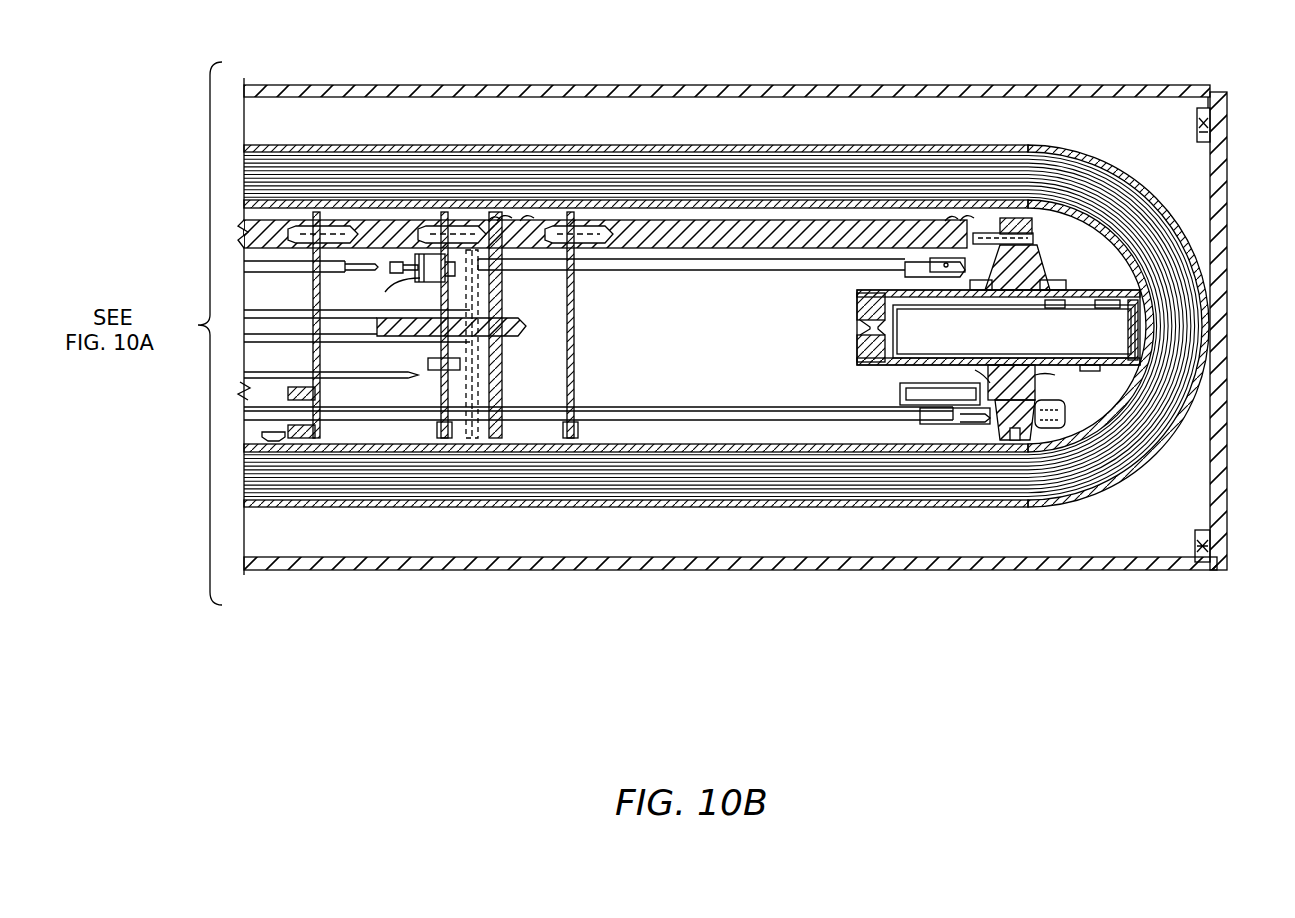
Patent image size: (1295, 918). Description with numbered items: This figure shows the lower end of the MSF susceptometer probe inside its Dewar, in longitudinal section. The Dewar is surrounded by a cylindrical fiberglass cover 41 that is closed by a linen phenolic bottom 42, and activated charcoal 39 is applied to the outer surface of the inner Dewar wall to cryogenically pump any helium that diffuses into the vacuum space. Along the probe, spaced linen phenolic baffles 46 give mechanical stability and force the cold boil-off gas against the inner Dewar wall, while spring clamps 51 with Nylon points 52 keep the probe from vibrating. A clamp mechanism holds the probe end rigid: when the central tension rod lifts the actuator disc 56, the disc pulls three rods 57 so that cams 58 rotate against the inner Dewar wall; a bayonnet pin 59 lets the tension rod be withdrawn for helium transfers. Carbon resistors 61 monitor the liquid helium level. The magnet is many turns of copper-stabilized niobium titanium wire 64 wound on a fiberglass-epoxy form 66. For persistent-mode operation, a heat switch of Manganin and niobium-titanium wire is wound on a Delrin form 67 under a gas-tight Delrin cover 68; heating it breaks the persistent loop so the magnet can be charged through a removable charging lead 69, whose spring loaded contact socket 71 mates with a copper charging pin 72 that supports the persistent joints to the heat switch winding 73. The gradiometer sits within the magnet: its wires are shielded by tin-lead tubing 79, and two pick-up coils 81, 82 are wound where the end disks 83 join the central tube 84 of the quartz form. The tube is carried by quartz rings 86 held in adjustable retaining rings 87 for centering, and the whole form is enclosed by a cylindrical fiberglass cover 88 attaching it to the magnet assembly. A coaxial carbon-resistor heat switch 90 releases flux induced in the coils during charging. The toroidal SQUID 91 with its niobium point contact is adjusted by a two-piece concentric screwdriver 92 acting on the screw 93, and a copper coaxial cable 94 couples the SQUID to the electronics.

The activated charcoal 39 is at (1160, 348).
The cylindrical cover 41 is at (1132, 568).
The linen phenolic bottom 42 is at (1220, 430).
The baffles 46 is at (318, 380).
The spring clamps 51 is at (293, 440).
The Nylon points 52 is at (271, 440).
The actuator disc 56 is at (497, 380).
The rods 57 is at (640, 266).
The cams 58 is at (947, 262).
The bayonnet pin 59 is at (478, 370).
The carbon resistors 61 is at (508, 218).
The niobium titanium wire 64 is at (1036, 228).
The fiberglass-epoxy form 66 is at (1053, 280).
The Delrin form 67 is at (903, 410).
The Delrin cover 68 is at (895, 393).
The charging lead 69 is at (700, 424).
The spring loaded contact socket 71 is at (940, 426).
The copper charging pins 72 is at (1010, 440).
The heat switch winding 73 is at (1050, 430).
The tin-lead tubing 79 is at (1125, 298).
The pick-up coil 81 is at (912, 290).
The pick-up coil 82 is at (1208, 132).
The end disks 83 is at (893, 300).
The central tube 84 is at (1088, 365).
The quartz rings 86 is at (1138, 418).
The retaining rings 87 is at (1005, 238).
The cylindrical fiberglass cover 88 is at (858, 365).
The coaxial carbon-resistor heat switch 90 is at (405, 270).
The toroidal SQUID 91 is at (430, 270).
The two-piece concentric screwdriver 92 is at (336, 266).
The screw 93 is at (392, 288).
The copper coaxial cable 94 is at (246, 376).